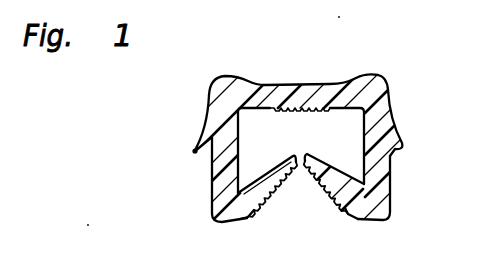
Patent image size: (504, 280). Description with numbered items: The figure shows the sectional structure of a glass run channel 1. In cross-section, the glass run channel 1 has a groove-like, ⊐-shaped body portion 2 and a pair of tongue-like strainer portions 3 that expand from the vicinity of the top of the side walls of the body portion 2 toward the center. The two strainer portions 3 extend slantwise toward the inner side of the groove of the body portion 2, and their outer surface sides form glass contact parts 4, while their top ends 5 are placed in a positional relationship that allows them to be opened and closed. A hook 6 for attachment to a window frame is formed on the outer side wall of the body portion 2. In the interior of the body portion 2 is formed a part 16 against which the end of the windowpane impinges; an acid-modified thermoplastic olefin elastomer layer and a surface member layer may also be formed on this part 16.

The glass run channel 1 is at (307, 151).
The body portion 2 is at (219, 121).
The strainer portion 3 is at (253, 216).
The glass contact part 4 is at (272, 197).
The top end 5 is at (293, 151).
The hook 6 is at (405, 143).
The part impinging to the end of the windowpane 16 is at (291, 122).